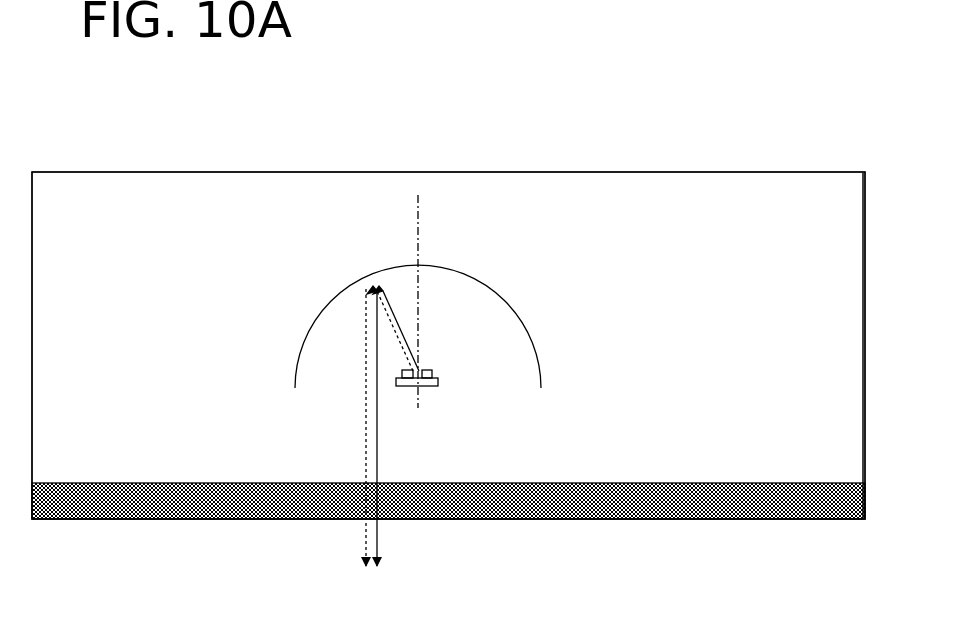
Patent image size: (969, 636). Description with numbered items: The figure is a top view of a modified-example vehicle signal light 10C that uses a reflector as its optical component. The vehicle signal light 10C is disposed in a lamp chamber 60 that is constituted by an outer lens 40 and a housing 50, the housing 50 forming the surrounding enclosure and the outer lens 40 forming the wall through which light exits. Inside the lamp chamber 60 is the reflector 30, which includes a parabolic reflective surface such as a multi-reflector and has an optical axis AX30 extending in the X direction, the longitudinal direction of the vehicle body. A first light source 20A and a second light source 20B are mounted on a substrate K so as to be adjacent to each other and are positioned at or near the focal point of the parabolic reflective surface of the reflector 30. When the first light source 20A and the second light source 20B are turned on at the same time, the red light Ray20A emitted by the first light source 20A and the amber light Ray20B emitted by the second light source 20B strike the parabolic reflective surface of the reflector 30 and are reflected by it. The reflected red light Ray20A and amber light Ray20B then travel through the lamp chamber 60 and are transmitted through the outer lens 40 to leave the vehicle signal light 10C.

The vehicle signal light 10C is at (434, 66).
The housing 50 is at (502, 172).
The lamp chamber 60 is at (611, 226).
The outer lens 40 is at (746, 520).
The optical axis AX30 is at (416, 223).
The reflector 30 is at (450, 275).
The substrate K is at (430, 388).
The first light source 20A is at (438, 372).
The second light source 20B is at (435, 352).
The red light Ray20A is at (383, 540).
The amber light Ray20B is at (363, 546).